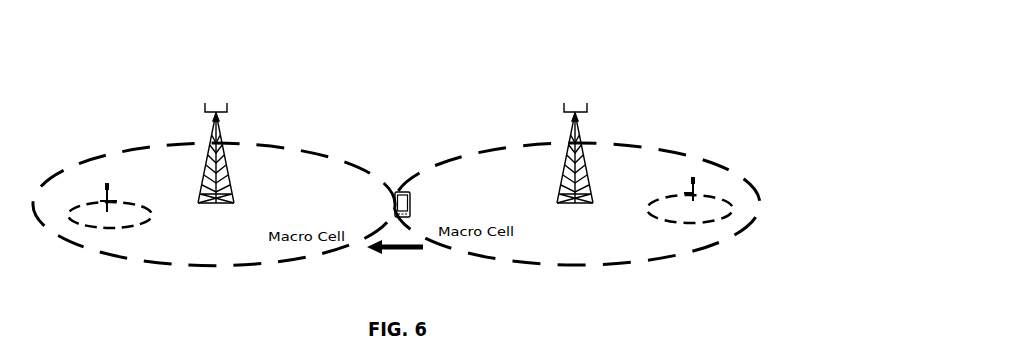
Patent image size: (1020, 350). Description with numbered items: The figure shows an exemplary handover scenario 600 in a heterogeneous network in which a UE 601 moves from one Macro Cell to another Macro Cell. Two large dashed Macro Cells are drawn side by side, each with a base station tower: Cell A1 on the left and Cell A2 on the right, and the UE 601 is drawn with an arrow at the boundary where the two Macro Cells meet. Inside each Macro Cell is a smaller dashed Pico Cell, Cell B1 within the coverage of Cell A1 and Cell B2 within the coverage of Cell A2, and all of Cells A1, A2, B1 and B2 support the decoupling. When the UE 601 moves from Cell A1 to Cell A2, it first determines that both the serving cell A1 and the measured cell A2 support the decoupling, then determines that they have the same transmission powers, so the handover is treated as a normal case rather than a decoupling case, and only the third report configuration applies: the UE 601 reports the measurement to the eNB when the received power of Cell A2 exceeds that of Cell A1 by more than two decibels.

The handover scenario 600 is at (587, 53).
The UE 601 is at (399, 184).
The Cell A1 is at (225, 152).
The Cell A2 is at (586, 152).
The Cell B1 is at (110, 199).
The Cell B2 is at (690, 192).